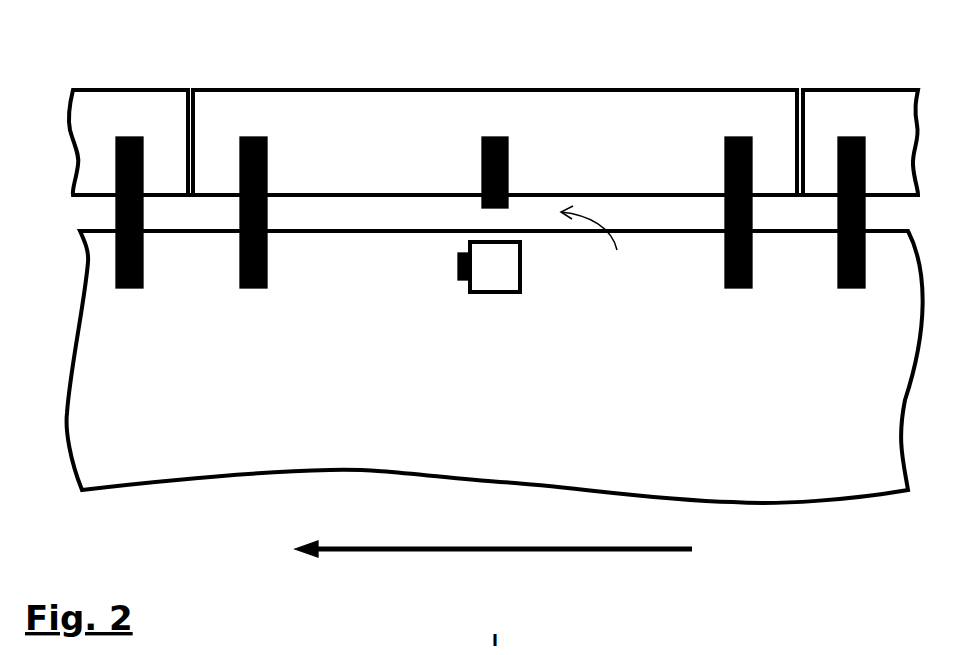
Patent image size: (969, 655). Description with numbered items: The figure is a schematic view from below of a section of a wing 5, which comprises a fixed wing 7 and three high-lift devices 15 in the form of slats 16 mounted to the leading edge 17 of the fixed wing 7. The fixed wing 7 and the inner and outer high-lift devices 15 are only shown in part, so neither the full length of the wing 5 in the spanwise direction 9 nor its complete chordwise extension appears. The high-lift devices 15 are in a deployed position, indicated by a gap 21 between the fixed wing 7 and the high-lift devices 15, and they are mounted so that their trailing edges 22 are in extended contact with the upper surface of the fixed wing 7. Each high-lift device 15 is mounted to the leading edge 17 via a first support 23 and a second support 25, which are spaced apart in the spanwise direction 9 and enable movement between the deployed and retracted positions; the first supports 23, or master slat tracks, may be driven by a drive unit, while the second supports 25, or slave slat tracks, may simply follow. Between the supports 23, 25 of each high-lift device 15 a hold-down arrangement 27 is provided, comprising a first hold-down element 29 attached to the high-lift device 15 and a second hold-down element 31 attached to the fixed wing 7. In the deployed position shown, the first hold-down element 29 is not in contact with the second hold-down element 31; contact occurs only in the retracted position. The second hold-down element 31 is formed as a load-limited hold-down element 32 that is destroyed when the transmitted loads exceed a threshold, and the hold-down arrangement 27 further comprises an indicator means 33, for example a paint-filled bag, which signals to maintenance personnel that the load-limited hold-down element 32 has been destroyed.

The wing 5 is at (848, 527).
The fixed wing 7 is at (495, 367).
The spanwise direction 9 is at (568, 552).
The high-lift device 15 is at (475, 122).
The slat 16 is at (517, 121).
The leading edge 17 is at (67, 351).
The gap 21 is at (495, 213).
The trailing edge 22 is at (107, 195).
The first support 23 is at (240, 212).
The second support 25 is at (116, 212).
The hold-down arrangement 27 is at (596, 245).
The first hold-down element 29 is at (508, 168).
The second hold-down element 31 is at (520, 265).
The load-limited hold-down element 32 is at (495, 267).
The indicator means 33 is at (458, 266).